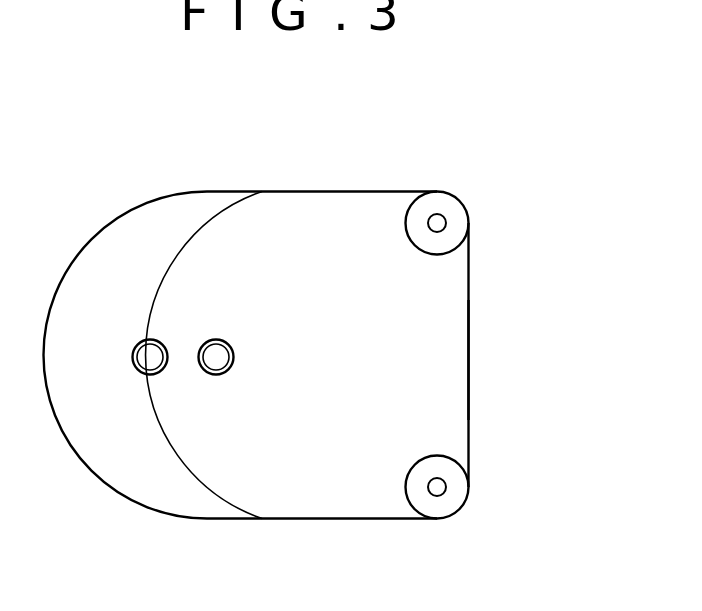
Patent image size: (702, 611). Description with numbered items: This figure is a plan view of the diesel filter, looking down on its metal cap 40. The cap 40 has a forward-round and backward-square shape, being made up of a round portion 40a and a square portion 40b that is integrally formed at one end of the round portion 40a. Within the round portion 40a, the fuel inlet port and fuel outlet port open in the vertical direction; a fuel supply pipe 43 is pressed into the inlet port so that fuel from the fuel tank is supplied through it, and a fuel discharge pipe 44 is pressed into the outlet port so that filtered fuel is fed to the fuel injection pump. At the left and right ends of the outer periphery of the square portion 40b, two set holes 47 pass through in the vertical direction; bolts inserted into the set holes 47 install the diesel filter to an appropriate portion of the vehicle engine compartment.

The cap 40 is at (368, 189).
The round portion 40a is at (140, 238).
The square portion 40b is at (440, 347).
The fuel supply pipe 43 is at (217, 338).
The fuel discharge pipe 44 is at (152, 338).
The set holes 47 is at (445, 220).